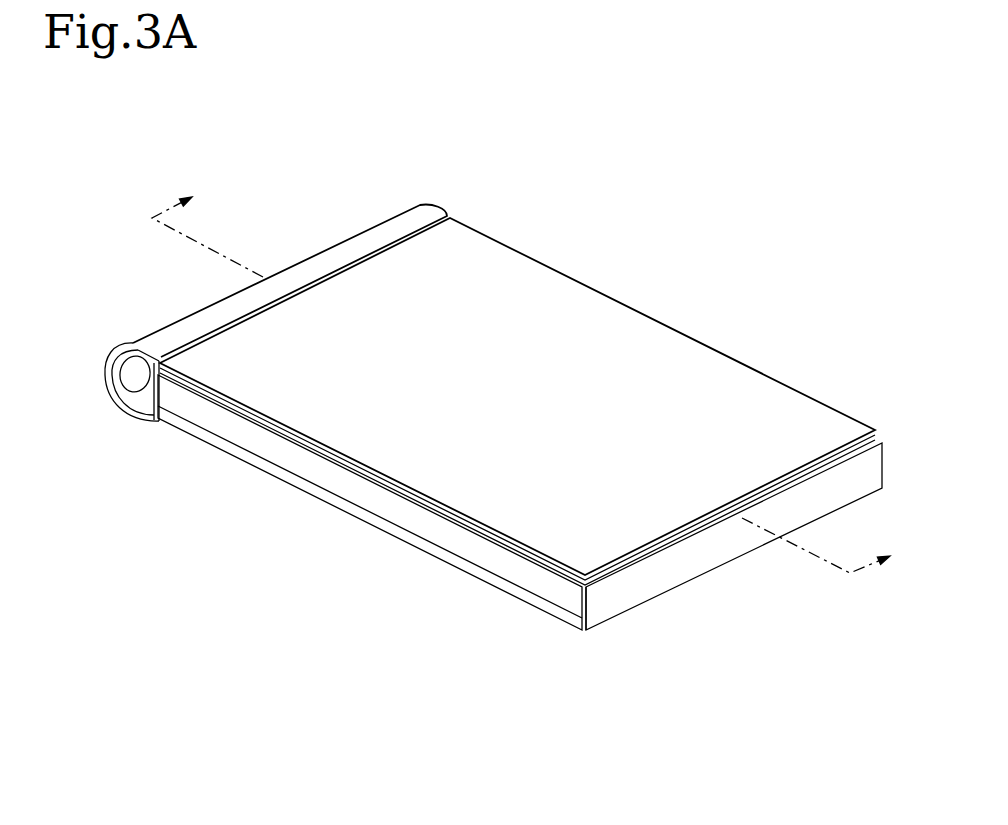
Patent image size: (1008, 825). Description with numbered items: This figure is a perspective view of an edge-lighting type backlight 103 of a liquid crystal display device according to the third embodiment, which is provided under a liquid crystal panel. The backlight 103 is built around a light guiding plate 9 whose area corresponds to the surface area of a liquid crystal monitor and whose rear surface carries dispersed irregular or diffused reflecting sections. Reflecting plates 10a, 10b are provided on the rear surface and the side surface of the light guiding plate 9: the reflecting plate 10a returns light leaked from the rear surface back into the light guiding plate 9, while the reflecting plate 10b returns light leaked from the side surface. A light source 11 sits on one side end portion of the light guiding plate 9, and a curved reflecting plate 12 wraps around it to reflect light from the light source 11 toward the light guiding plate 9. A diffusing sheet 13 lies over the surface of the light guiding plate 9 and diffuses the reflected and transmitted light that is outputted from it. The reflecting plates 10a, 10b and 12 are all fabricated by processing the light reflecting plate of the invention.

The backlight 103 is at (343, 150).
The diffusing sheet 13 is at (619, 323).
The light guiding plate 9 is at (233, 423).
The reflecting plate 10a is at (390, 527).
The reflecting plate 10b is at (625, 600).
The light source 11 is at (131, 381).
The reflecting plate 12 is at (148, 423).